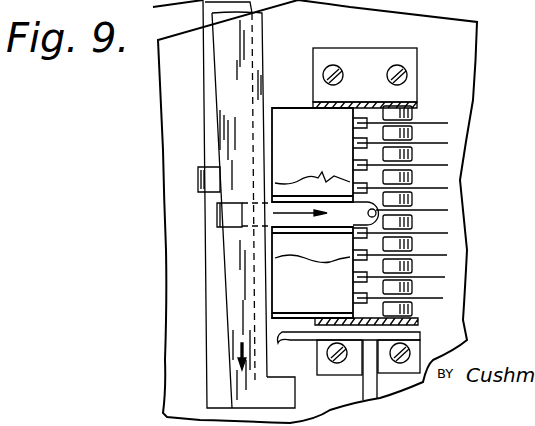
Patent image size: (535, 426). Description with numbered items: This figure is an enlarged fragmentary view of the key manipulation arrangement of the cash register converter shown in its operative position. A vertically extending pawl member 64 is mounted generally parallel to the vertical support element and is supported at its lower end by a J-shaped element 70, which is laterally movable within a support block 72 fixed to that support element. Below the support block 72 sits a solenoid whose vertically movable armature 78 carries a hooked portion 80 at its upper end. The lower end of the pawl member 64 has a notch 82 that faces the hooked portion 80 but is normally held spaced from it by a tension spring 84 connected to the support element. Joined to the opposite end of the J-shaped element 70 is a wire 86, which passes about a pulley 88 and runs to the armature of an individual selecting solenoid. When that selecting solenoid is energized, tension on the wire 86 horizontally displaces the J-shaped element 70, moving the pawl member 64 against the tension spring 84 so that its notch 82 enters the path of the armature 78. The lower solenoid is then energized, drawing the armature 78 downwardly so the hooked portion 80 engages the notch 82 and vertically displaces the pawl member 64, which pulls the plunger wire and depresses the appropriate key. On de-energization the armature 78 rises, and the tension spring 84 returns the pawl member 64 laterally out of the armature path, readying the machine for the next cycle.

The pawl member 64 is at (265, 43).
The J-shaped element 70 is at (217, 213).
The support block 72 is at (297, 108).
The armature 78 is at (385, 388).
The hooked portion 80 is at (297, 345).
The notch 82 is at (285, 380).
The tension spring 84 is at (232, 310).
The wire 86 is at (433, 123).
The pulley 88 is at (413, 220).